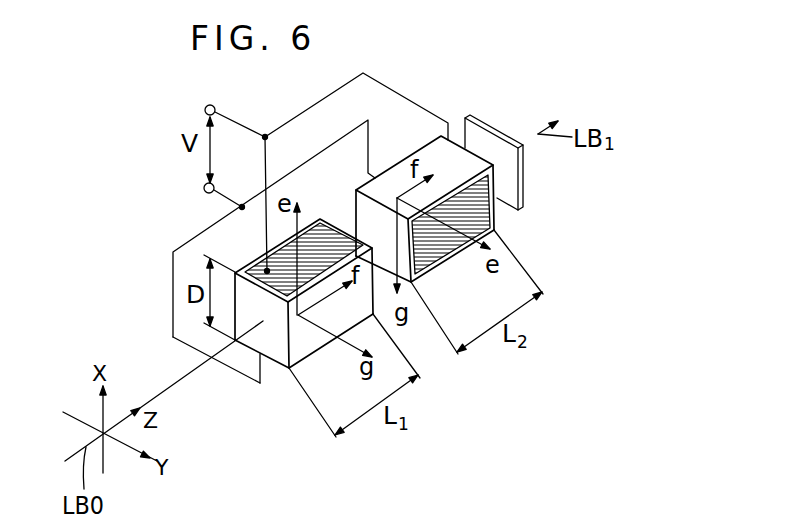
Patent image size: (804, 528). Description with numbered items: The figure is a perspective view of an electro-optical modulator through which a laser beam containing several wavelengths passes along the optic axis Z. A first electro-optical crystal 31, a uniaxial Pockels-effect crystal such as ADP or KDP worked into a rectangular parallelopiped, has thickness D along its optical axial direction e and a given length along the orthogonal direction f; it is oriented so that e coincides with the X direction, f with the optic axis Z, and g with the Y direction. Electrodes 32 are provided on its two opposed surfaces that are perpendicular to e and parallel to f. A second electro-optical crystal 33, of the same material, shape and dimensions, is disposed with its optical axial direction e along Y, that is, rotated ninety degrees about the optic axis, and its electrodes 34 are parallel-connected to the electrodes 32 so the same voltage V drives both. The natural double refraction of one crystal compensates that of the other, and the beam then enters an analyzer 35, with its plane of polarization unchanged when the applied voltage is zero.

The electro-optical crystal 31 is at (278, 360).
The electrodes 32 is at (325, 238).
The electro-optical crystal 33 is at (452, 220).
The electrodes 34 is at (483, 210).
The analyzer 35 is at (503, 138).